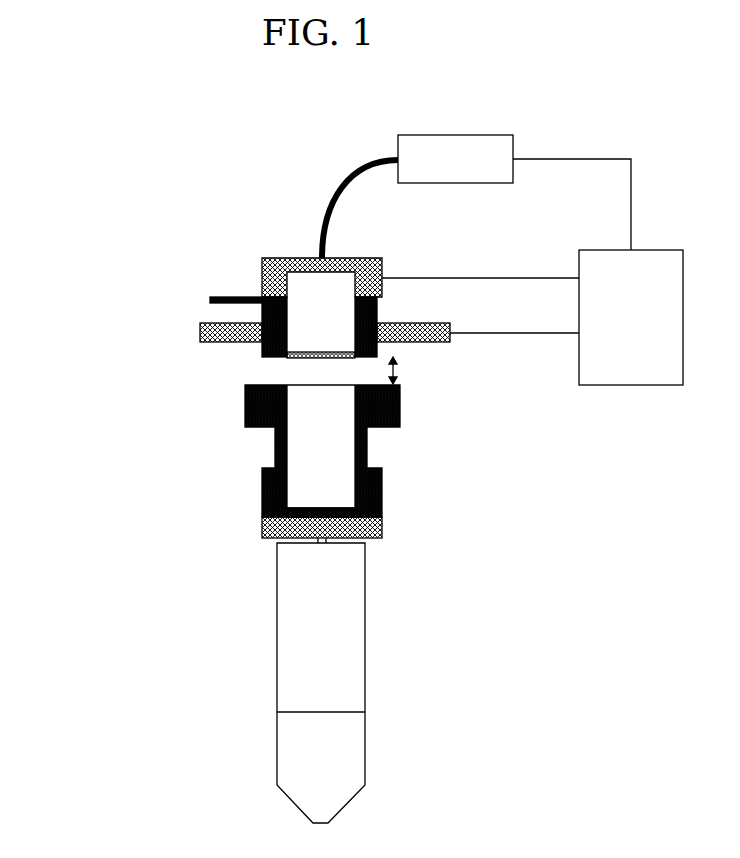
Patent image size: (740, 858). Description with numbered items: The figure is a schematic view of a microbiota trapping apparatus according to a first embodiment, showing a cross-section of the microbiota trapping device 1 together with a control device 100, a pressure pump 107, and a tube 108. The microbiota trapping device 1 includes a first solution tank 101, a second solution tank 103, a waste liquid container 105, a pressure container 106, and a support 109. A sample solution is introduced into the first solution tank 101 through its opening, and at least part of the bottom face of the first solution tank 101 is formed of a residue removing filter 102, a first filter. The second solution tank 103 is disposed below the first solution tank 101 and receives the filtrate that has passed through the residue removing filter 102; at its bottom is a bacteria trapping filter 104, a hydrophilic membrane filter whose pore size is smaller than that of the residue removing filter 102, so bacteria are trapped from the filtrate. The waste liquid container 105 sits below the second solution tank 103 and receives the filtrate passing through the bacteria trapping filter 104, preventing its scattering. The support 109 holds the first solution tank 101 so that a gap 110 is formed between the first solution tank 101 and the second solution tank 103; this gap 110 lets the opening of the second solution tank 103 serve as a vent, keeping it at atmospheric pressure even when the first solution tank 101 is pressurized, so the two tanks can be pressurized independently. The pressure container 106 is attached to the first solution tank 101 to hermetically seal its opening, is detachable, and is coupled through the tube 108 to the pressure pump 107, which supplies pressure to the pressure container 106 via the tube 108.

The microbiota trapping device 1 is at (80, 288).
The control device 100 is at (662, 250).
The first solution tank 101 is at (213, 299).
The residue removing filter 102 is at (308, 358).
The second solution tank 103 is at (245, 402).
The bacteria trapping filter 104 is at (307, 498).
The waste liquid container 105 is at (277, 650).
The pressure container 106 is at (262, 262).
The pressure pump 107 is at (457, 135).
The tube 108 is at (346, 196).
The support 109 is at (200, 331).
The gap 110 is at (398, 370).